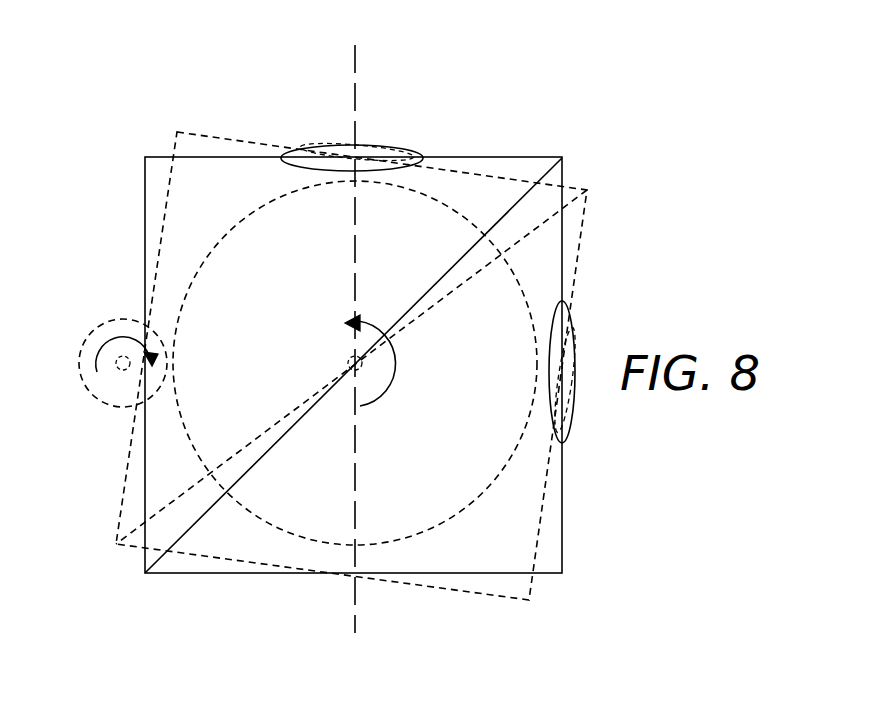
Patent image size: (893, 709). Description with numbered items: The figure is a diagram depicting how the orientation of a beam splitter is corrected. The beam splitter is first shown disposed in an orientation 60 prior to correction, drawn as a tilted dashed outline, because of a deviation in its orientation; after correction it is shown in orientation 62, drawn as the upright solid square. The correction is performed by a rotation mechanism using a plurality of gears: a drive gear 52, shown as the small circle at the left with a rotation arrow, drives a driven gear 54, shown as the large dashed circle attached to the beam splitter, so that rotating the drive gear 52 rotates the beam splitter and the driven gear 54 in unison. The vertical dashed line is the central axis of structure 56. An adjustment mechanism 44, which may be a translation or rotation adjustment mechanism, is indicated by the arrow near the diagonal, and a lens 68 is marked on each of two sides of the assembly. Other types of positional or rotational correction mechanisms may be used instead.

The adjustment mechanism 44 is at (548, 265).
The drive gear 52 is at (90, 333).
The driven gear 54 is at (428, 190).
The central axis of structure 56 is at (352, 90).
The beam splitter orientation prior to correction 60 is at (170, 138).
The beam splitter orientation after correction 62 is at (143, 201).
The lens 68 is at (392, 150).